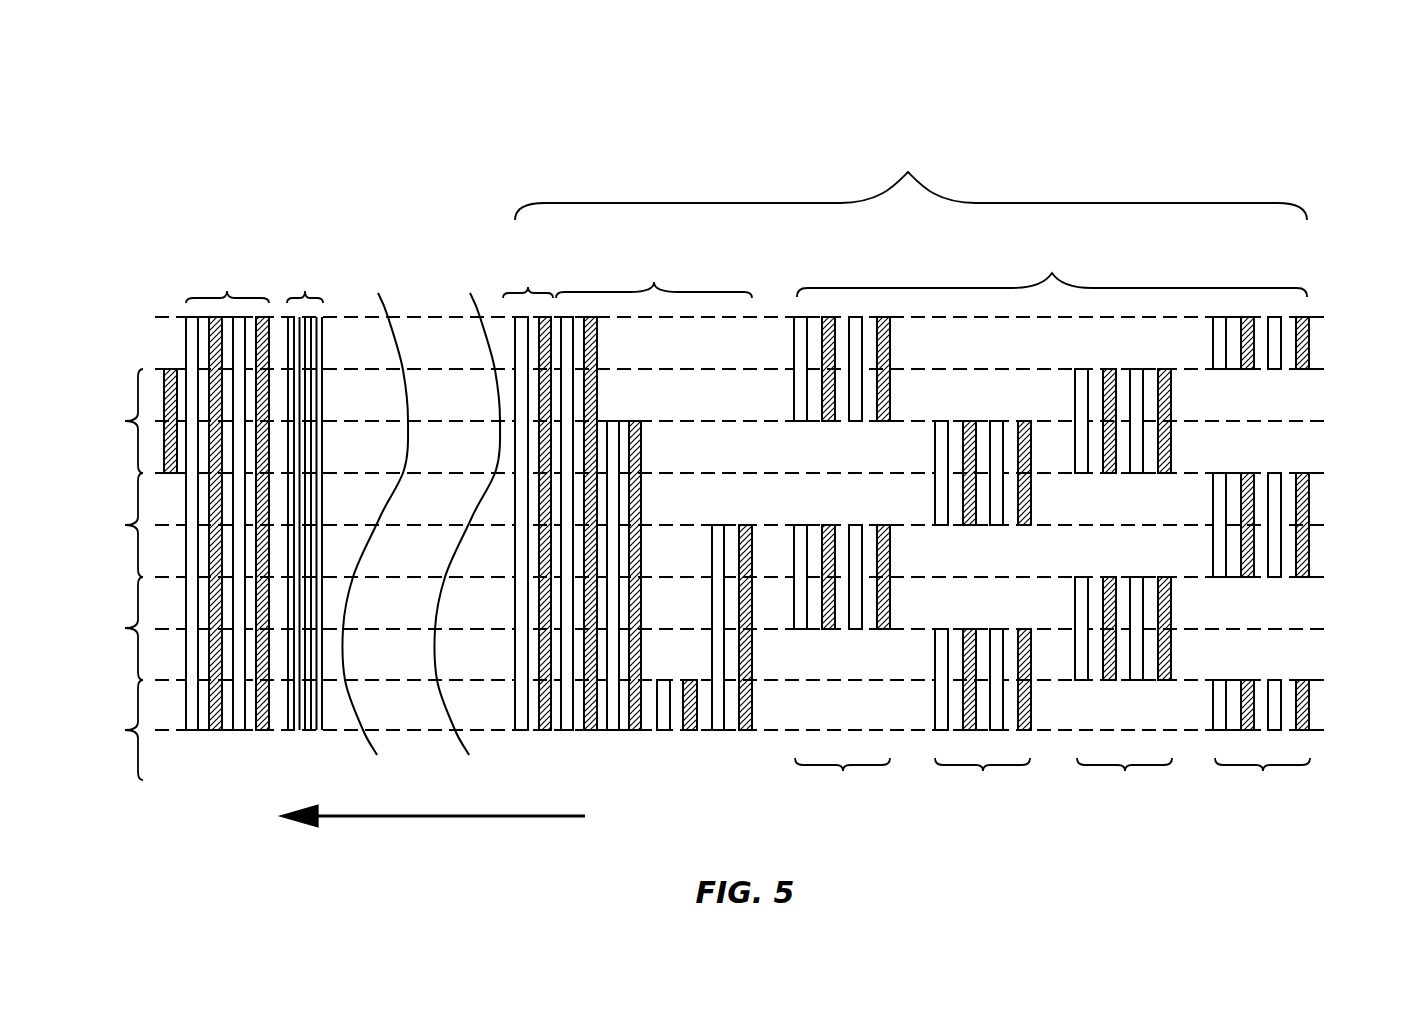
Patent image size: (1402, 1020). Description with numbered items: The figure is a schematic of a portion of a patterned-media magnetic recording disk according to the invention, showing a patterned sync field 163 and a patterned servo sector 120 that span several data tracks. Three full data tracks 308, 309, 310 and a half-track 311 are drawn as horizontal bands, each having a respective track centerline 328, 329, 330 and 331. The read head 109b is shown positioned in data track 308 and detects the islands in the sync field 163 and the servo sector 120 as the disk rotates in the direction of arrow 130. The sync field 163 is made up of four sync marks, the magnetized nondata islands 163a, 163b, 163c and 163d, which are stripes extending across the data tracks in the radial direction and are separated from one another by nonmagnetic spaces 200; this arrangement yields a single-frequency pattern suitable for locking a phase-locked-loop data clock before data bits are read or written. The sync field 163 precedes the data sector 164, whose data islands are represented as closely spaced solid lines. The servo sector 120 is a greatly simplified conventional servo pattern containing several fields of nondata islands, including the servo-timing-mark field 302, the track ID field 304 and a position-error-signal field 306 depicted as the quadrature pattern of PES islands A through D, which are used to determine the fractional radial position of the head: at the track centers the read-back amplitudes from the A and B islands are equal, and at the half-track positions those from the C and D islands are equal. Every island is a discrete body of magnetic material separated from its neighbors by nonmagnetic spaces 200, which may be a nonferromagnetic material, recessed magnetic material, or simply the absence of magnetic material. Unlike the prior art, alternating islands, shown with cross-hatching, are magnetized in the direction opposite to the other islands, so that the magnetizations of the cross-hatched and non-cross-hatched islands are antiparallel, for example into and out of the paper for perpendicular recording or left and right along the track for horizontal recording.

The servo sector 120 is at (911, 179).
The sync field 163 is at (204, 552).
The sync mark 163a is at (193, 722).
The sync mark 163b is at (212, 722).
The sync mark 163c is at (238, 722).
The sync mark 163d is at (262, 722).
The data sector 164 is at (305, 497).
The read head 109b is at (172, 368).
The arrow 130 is at (390, 823).
The nonmagnetic spaces 200 is at (202, 705).
The servo-timing-mark field 302 is at (507, 292).
The track ID field 304 is at (727, 290).
The position error signal field 306 is at (882, 290).
The data track 308 is at (701, 421).
The data track 309 is at (701, 525).
The data track 310 is at (701, 628).
The half-track 311 is at (701, 730).
The track centerline 328 is at (1320, 421).
The track centerline 329 is at (1320, 525).
The track centerline 330 is at (1320, 629).
The track centerline 331 is at (1320, 730).